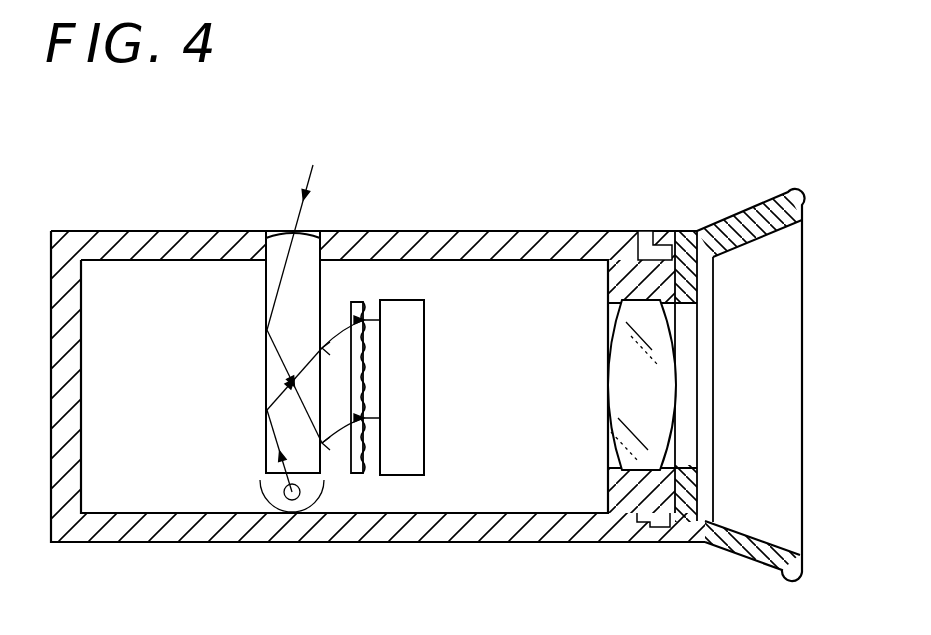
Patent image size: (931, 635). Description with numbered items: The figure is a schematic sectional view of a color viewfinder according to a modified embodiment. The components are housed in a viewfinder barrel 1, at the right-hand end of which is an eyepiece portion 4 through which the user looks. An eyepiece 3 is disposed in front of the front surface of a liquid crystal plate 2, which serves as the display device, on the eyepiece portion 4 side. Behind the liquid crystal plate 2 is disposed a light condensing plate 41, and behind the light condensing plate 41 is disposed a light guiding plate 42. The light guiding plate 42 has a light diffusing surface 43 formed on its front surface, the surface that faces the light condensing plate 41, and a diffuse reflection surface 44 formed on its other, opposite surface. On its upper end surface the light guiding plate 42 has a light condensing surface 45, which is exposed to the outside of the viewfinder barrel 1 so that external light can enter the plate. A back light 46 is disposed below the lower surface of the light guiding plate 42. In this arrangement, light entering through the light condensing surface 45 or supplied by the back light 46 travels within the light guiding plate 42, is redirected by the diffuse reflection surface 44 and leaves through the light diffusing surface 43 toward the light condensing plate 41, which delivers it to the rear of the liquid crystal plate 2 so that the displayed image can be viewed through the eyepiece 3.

The viewfinder barrel 1 is at (566, 231).
The liquid crystal plate 2 is at (410, 375).
The eyepiece 3 is at (660, 383).
The eyepiece portion 4 is at (756, 217).
The light condensing plate 41 is at (350, 300).
The light guiding plate 42 is at (310, 268).
The light diffusing surface 43 is at (325, 460).
The diffuse reflection surface 44 is at (262, 303).
The light condensing surface 45 is at (272, 237).
The back light 46 is at (292, 500).